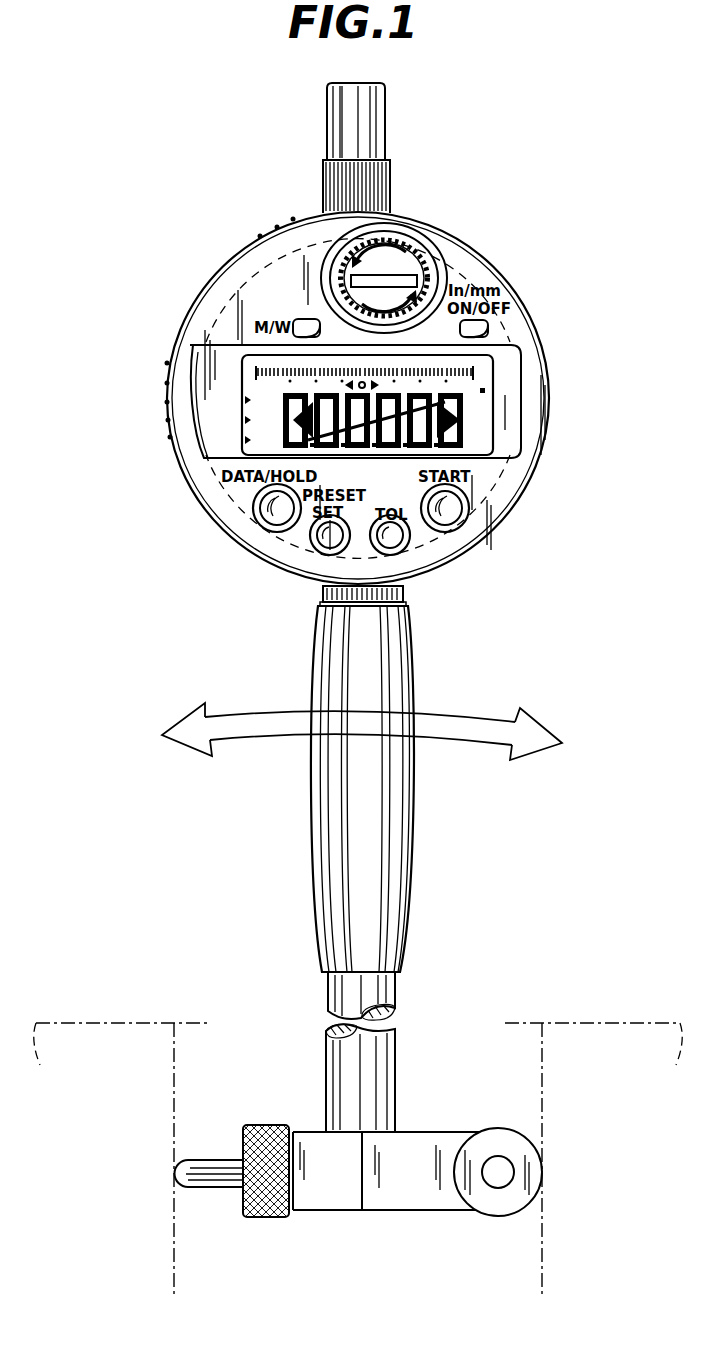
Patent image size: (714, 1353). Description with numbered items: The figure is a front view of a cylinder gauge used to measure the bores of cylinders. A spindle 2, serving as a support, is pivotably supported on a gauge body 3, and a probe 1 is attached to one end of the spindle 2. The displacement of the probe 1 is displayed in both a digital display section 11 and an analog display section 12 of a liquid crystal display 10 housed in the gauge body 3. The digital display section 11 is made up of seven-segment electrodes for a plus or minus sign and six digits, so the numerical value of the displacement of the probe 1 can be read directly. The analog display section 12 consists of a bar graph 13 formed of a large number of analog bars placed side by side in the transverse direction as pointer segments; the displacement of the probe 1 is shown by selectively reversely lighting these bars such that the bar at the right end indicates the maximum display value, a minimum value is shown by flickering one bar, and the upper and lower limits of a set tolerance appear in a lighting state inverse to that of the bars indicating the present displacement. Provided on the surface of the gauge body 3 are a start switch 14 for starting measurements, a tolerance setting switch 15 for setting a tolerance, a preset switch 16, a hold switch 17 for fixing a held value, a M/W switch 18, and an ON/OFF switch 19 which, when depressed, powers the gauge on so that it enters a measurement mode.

The probe 1 is at (204, 1163).
The spindle 2 is at (395, 1056).
The gauge body 3 is at (213, 259).
The liquid crystal display 10 is at (377, 380).
The digital display section 11 is at (560, 402).
The analog display section 12 is at (447, 351).
The bar graph 13 is at (470, 372).
The start switch 14 is at (452, 522).
The tolerance setting switch 15 is at (395, 548).
The preset switch 16 is at (330, 548).
The hold switch 17 is at (272, 522).
The M/W switch 18 is at (298, 319).
The ON/OFF switch 19 is at (488, 330).